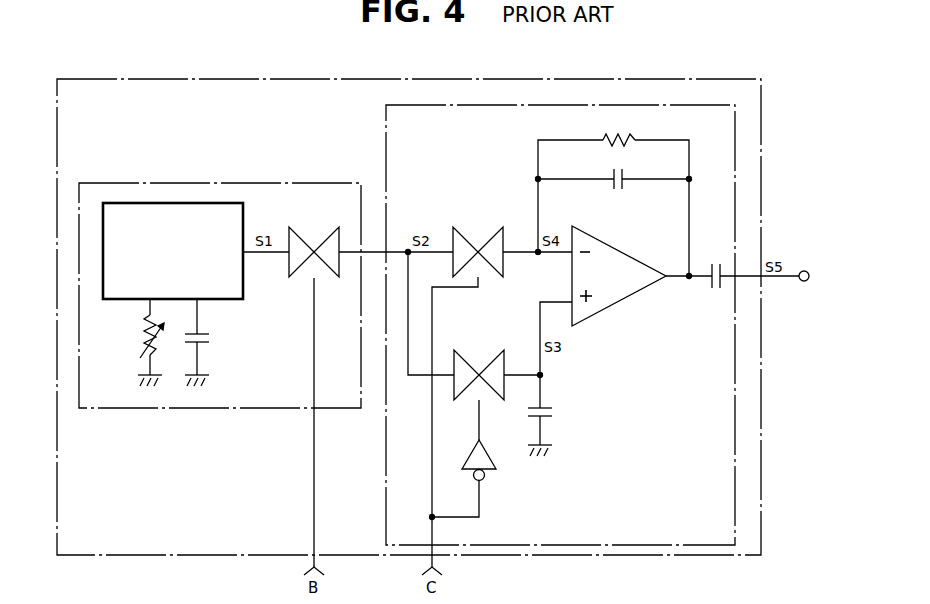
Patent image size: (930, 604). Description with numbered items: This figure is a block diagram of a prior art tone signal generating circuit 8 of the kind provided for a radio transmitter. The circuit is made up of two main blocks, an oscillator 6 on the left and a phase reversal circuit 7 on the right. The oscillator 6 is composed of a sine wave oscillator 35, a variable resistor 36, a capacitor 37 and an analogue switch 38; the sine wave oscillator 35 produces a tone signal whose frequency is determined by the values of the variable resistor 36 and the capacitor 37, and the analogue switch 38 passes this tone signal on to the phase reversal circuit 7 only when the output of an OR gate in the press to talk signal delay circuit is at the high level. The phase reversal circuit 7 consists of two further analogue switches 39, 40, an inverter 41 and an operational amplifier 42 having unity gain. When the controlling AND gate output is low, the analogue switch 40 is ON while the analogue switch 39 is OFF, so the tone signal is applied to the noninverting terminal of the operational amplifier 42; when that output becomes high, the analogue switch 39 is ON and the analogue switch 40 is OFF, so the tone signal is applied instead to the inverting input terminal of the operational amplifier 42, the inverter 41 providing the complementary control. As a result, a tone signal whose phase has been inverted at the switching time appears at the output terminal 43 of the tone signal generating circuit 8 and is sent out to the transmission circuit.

The tone signal generating circuit 8 is at (201, 78).
The oscillator 6 is at (135, 182).
The phase reversal circuit 7 is at (733, 420).
The sine wave oscillator 35 is at (244, 284).
The variable resistor 36 is at (144, 338).
The capacitor 37 is at (210, 340).
The analogue switch 38 is at (312, 228).
The analogue switch 39 is at (480, 240).
The analogue switch 40 is at (478, 366).
The inverter 41 is at (495, 464).
The operational amplifier 42 is at (631, 298).
The output terminal 43 is at (804, 270).